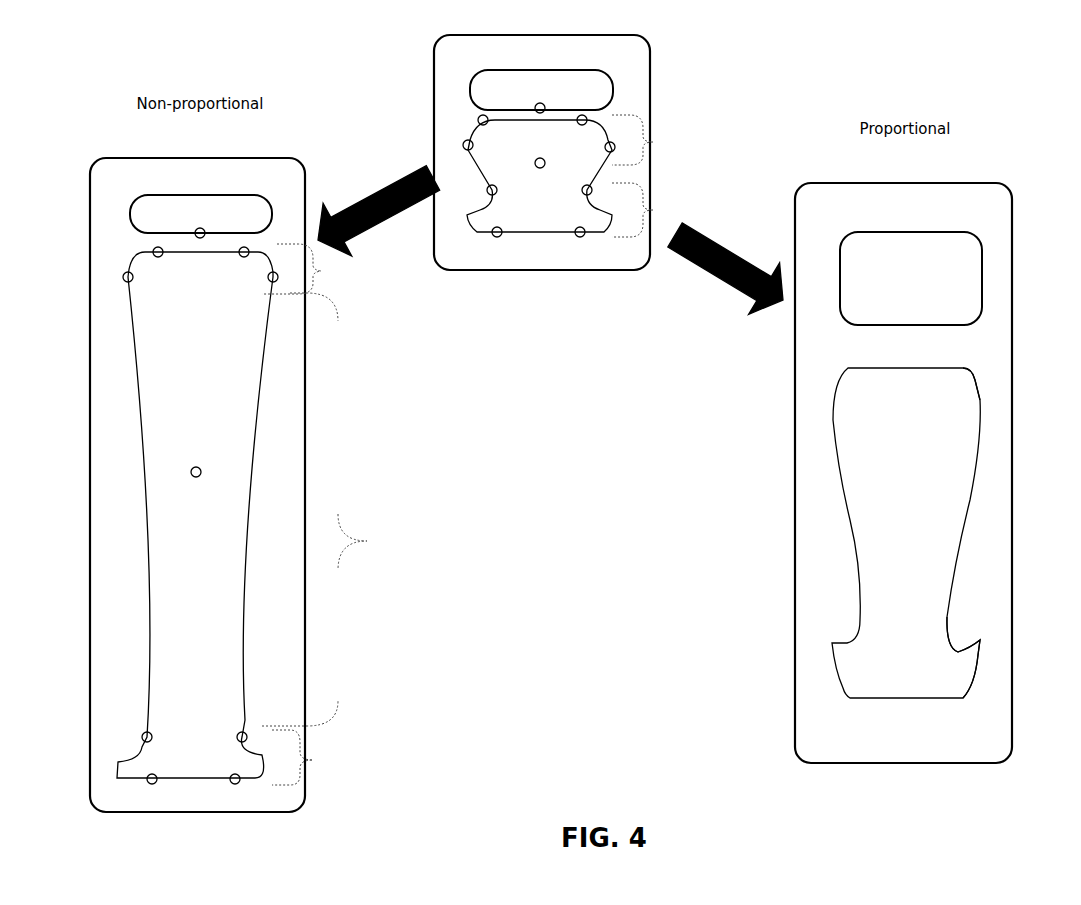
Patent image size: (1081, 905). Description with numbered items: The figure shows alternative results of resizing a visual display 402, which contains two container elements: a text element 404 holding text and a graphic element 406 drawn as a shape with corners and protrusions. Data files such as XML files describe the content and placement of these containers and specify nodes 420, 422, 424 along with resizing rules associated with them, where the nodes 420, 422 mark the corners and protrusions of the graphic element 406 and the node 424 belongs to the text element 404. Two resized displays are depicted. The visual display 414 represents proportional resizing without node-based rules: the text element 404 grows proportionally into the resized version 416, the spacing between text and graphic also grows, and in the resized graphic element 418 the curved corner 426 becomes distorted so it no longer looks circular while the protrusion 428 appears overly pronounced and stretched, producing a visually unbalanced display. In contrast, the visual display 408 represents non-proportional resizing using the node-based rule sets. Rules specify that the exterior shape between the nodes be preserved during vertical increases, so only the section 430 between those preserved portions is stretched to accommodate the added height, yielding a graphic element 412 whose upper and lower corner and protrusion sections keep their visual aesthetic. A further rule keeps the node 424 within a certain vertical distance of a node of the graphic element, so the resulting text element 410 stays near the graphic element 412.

The visual display 402 is at (646, 58).
The text element 404 is at (564, 78).
The graphic element 406 is at (600, 125).
The visual display 408 is at (303, 182).
The text element 410 is at (228, 202).
The graphic element 412 is at (254, 395).
The visual display 414 is at (1007, 198).
The resized version 416 is at (940, 238).
The resized graphic element 418 is at (935, 368).
The nodes 420 is at (492, 204).
The nodes 422 is at (498, 484).
The node 424 is at (545, 108).
The curved corner 426 is at (970, 370).
The protrusion 428 is at (980, 645).
The section 430 is at (348, 509).